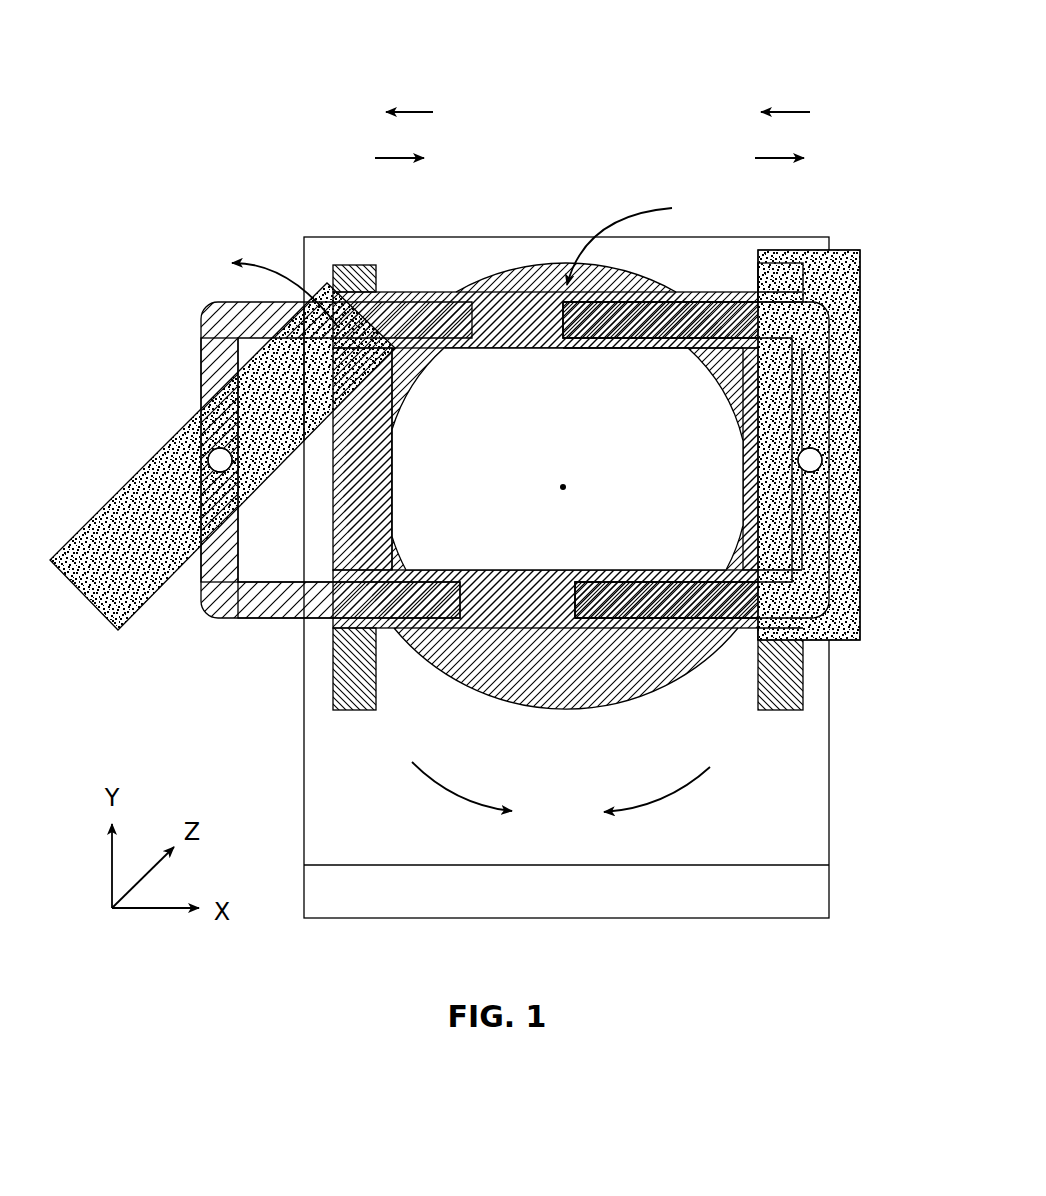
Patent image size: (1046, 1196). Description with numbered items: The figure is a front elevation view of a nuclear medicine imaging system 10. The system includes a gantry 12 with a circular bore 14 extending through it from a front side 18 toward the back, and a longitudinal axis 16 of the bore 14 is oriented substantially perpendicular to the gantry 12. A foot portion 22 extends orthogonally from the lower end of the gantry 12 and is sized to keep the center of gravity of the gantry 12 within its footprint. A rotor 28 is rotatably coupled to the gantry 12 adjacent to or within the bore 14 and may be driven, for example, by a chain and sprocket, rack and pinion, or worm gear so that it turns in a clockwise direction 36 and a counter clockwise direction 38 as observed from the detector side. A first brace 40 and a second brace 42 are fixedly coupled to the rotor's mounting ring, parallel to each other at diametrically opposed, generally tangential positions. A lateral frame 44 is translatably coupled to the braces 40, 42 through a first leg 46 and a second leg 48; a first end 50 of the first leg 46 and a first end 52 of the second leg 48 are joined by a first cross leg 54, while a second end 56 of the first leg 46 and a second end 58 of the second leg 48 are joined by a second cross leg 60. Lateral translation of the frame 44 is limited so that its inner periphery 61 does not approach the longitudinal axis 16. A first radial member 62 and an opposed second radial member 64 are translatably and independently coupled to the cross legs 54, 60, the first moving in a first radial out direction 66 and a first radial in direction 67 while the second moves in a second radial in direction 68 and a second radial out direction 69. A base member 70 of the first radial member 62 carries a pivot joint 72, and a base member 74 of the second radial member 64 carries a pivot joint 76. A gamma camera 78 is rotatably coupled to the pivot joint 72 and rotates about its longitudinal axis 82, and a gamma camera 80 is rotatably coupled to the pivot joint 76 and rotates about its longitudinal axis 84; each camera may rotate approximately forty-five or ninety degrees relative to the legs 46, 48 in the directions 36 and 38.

The nuclear medicine imaging system 10 is at (290, 64).
The gantry 12 is at (550, 834).
The bore 14 is at (631, 508).
The longitudinal axis 16 is at (560, 486).
The front side 18 is at (831, 781).
The foot portion 22 is at (550, 907).
The rotor 28 is at (490, 683).
The clockwise direction 36 is at (668, 790).
The counter clockwise direction 38 is at (455, 790).
The first brace 40 is at (342, 268).
The second brace 42 is at (803, 702).
The lateral frame 44 is at (548, 350).
The first leg 46 is at (398, 468).
The second leg 48 is at (743, 460).
The first end of first leg 50 is at (383, 289).
The first end of second leg 52 is at (746, 291).
The first cross leg 54 is at (605, 350).
The second end of first leg 56 is at (330, 628).
The second end of second leg 58 is at (753, 632).
The second cross leg 60 is at (527, 629).
The inner periphery 61 is at (392, 530).
The first radial member 62 is at (207, 610).
The second radial member 64 is at (660, 350).
The Radial-1 out direction 66 is at (410, 112).
The Radial-1 in direction 67 is at (402, 160).
The Radial-2 in direction 68 is at (788, 112).
The Radial-2 out direction 69 is at (782, 160).
The base member 70 is at (230, 545).
The pivot joint 72 is at (208, 457).
The base member 74 is at (850, 612).
The pivot joint 76 is at (822, 460).
The gamma camera 78 is at (120, 593).
The gamma camera 80 is at (835, 268).
The longitudinal axis of pivot joint 82 is at (210, 464).
The longitudinal axis of pivot joint 84 is at (818, 468).